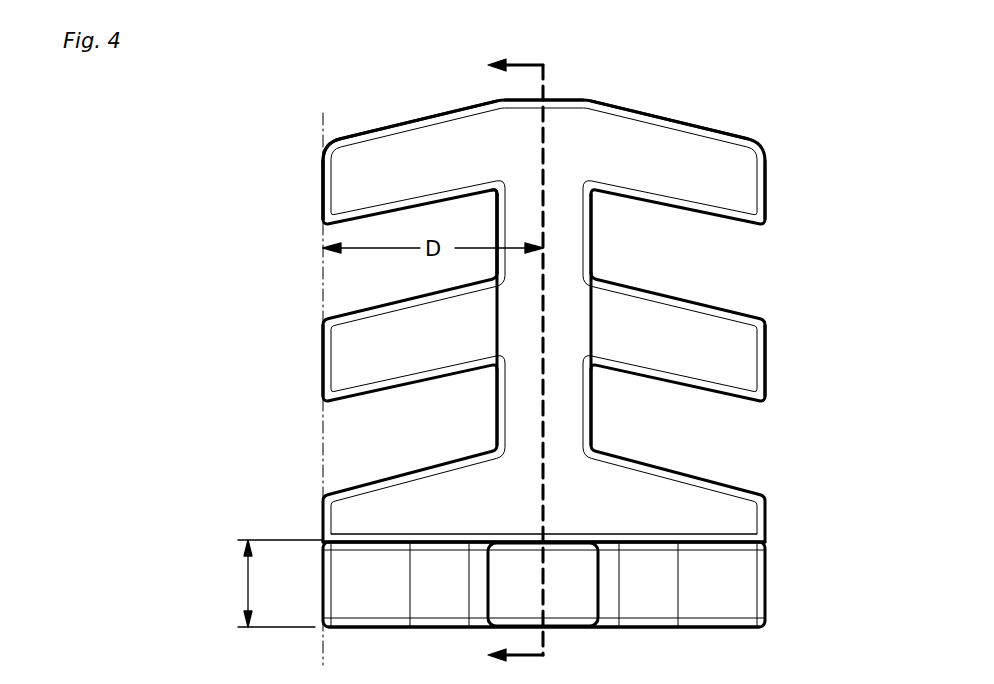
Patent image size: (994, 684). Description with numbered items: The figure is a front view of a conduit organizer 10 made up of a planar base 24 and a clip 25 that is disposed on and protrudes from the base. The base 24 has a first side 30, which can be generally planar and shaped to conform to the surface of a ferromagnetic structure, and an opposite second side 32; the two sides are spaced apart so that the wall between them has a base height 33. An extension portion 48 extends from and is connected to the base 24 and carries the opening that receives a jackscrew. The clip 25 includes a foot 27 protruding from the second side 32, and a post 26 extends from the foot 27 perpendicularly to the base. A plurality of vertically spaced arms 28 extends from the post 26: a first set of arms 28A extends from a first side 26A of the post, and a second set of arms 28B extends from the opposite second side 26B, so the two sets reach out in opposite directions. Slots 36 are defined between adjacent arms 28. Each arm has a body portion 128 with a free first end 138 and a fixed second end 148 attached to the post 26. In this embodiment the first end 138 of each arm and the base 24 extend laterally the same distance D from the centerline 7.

The conduit organizer 10 is at (787, 80).
The base 24 is at (733, 582).
The clip 25 is at (575, 97).
The post 26 is at (560, 413).
The first side of the post 26A is at (493, 147).
The second side of the post 26B is at (590, 220).
The foot 27 is at (385, 517).
The arms 28 is at (405, 167).
The first set of arms 28A is at (340, 185).
The second set of arms 28B is at (747, 185).
The first side of the base 30 is at (722, 627).
The second side of the base 32 is at (725, 540).
The base height 33 is at (248, 585).
The slots 36 is at (368, 260).
The extension portion 48 is at (488, 585).
The body portion 128 is at (363, 145).
The first end 138 is at (342, 198).
The second end 148 is at (493, 213).
The centerline 7 is at (505, 365).